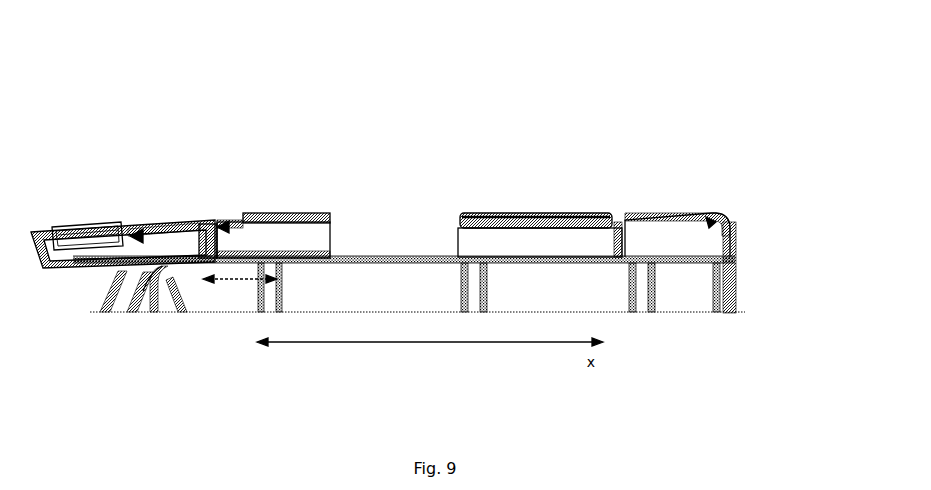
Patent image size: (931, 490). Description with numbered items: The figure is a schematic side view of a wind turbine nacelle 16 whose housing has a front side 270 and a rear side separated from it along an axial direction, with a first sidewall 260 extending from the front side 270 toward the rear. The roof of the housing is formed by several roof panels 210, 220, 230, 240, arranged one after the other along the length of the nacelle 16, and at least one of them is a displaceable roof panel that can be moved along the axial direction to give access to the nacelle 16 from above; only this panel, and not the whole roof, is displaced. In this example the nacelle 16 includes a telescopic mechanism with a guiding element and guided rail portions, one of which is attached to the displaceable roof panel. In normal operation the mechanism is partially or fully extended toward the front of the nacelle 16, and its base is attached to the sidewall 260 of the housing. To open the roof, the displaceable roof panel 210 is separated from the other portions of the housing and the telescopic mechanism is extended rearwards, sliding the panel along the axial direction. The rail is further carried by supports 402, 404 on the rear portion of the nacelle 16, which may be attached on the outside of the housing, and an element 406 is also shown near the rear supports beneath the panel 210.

The wind turbine nacelle 16 is at (84, 79).
The roof panel 210 is at (85, 226).
The roof panel 220 is at (280, 232).
The roof panel 230 is at (537, 231).
The roof panel 240 is at (673, 231).
The first sidewall 260 is at (377, 304).
The front side 270 is at (737, 291).
The support 402 is at (317, 256).
The support 404 is at (158, 270).
The guide rail 406 is at (110, 261).